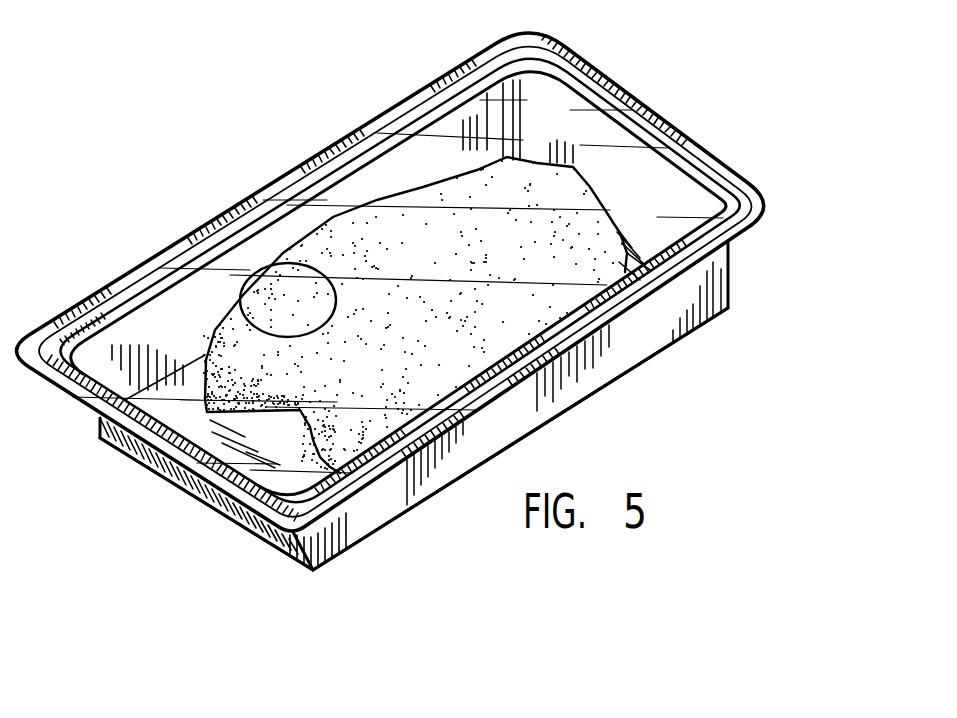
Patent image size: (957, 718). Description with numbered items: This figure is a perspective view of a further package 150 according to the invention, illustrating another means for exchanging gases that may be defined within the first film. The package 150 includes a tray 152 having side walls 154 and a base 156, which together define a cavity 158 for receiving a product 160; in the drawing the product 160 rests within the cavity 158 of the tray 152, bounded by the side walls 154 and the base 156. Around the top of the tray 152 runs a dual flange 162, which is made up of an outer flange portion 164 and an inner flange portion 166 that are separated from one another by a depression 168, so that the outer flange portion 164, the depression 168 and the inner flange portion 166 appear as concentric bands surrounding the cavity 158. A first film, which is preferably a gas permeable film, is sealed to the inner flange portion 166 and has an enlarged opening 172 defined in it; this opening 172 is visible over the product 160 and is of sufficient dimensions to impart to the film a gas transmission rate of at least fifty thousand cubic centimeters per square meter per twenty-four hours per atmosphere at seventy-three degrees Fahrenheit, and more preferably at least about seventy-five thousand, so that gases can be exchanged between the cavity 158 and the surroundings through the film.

The package 150 is at (133, 206).
The tray 152 is at (730, 263).
The side walls 154 is at (638, 347).
The base 156 is at (316, 570).
The cavity 158 is at (687, 200).
The product 160 is at (415, 330).
The dual flange 162 is at (583, 62).
The outer flange portion 164 is at (631, 103).
The inner flange portion 166 is at (676, 150).
The depression 168 is at (667, 121).
The enlarged opening 172 is at (243, 297).